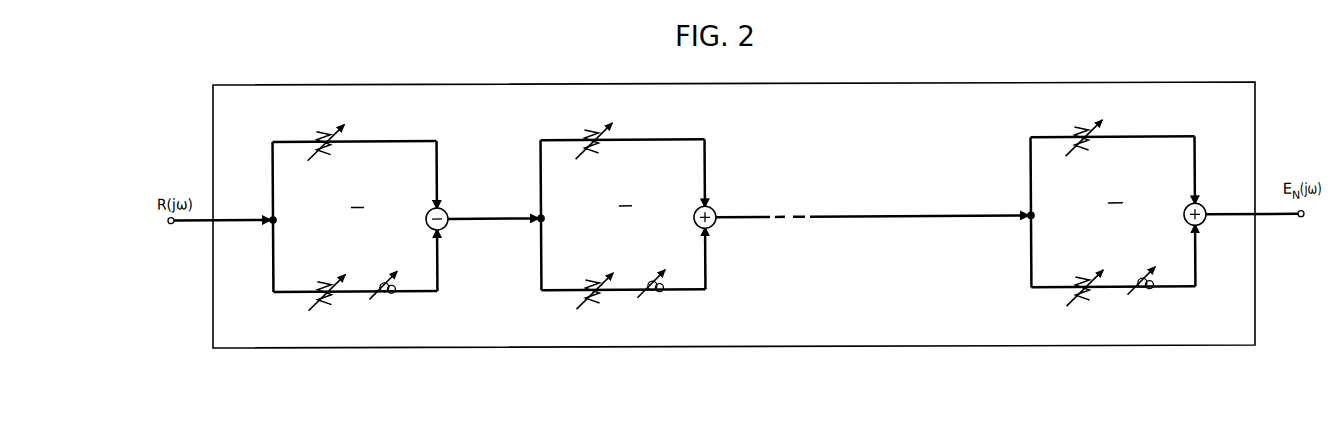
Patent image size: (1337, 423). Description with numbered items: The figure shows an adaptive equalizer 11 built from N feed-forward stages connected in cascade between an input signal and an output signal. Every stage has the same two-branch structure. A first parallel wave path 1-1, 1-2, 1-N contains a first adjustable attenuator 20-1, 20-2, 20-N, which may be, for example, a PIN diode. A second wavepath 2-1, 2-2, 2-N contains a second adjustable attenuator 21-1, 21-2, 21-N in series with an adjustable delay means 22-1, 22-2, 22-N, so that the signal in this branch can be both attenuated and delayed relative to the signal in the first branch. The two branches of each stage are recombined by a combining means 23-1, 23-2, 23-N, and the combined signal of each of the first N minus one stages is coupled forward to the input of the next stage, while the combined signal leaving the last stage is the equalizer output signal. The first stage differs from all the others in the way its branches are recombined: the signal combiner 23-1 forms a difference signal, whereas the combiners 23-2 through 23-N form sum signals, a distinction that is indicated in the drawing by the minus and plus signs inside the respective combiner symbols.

The equalizer network 11 is at (1210, 82).
The first parallel wave path 1-1 is at (407, 141).
The first parallel wave path 1-2 is at (622, 202).
The first parallel wave path 1-N is at (1112, 199).
The wavepath 2-1 is at (273, 276).
The wavepath 2-2 is at (521, 215).
The wavepath 2-N is at (1009, 212).
The first adjustable attenuator 20-1 is at (335, 151).
The first adjustable attenuator 20-2 is at (608, 136).
The first adjustable attenuator 20-N is at (1099, 133).
The second adjustable attenuator 21-1 is at (335, 301).
The second adjustable attenuator 21-2 is at (609, 285).
The second adjustable attenuator 21-N is at (1100, 282).
The adjustable delay means 22-1 is at (395, 294).
The adjustable delay means 22-2 is at (670, 279).
The adjustable delay means 22-N is at (1161, 276).
The signal combiner 23-1 is at (420, 216).
The signal combiner 23-2 is at (687, 214).
The signal combiner 23-N is at (1176, 211).